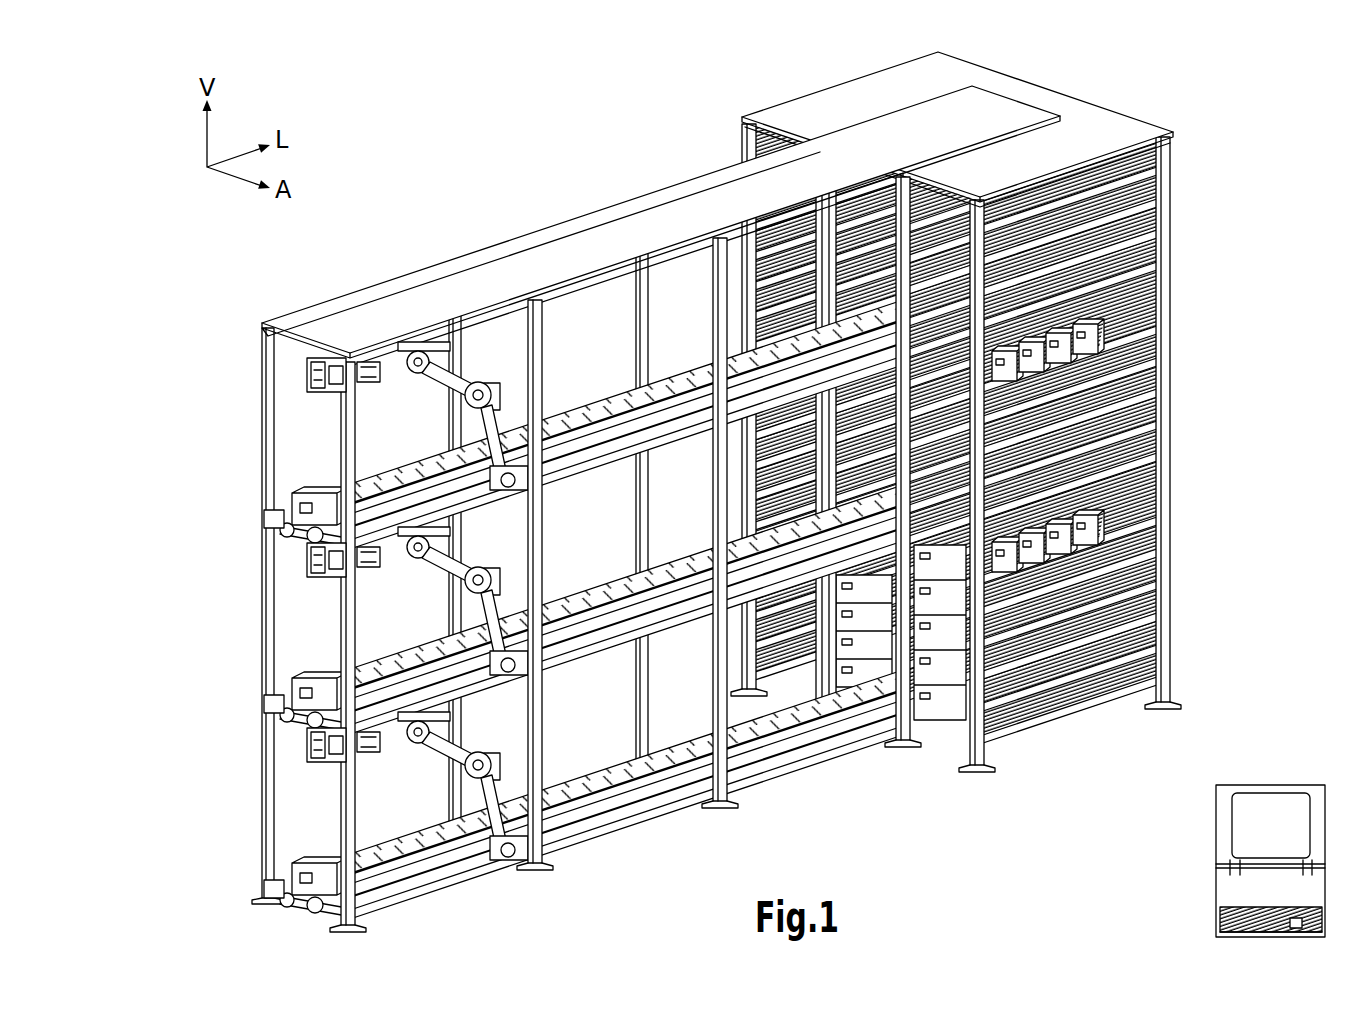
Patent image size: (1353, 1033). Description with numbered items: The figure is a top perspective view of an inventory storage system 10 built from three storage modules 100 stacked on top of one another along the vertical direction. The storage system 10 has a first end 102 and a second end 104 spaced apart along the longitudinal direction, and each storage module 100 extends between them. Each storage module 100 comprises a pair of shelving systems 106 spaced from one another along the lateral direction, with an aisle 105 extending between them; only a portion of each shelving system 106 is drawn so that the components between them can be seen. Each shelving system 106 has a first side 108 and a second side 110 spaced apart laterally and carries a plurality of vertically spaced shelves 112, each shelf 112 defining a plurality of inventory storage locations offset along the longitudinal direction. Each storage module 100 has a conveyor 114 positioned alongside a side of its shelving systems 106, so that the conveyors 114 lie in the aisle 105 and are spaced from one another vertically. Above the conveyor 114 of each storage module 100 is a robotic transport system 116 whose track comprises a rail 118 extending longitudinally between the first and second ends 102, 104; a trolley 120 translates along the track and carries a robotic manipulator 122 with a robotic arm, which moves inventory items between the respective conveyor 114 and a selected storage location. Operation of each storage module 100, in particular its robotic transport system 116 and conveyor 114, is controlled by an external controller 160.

The inventory storage system 10 is at (466, 182).
The storage module 100 is at (247, 438).
The first end 102 is at (250, 921).
The second end 104 is at (1228, 698).
The aisle 105 is at (1122, 81).
The shelving system 106 is at (968, 66).
The first side 108 is at (1010, 74).
The second side 110 is at (822, 88).
The shelf 112 is at (1142, 230).
The conveyor 114 is at (580, 433).
The robotic transport system 116 is at (293, 371).
The rail 118 is at (607, 278).
The trolley 120 is at (322, 380).
The robotic manipulator 122 is at (456, 382).
The controller 160 is at (1217, 834).